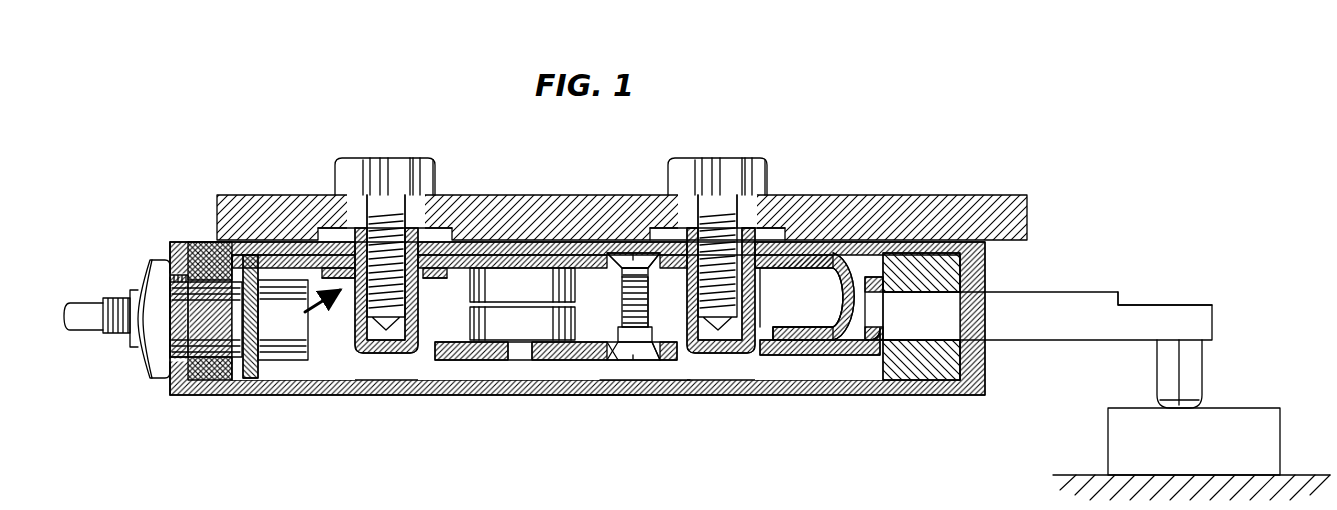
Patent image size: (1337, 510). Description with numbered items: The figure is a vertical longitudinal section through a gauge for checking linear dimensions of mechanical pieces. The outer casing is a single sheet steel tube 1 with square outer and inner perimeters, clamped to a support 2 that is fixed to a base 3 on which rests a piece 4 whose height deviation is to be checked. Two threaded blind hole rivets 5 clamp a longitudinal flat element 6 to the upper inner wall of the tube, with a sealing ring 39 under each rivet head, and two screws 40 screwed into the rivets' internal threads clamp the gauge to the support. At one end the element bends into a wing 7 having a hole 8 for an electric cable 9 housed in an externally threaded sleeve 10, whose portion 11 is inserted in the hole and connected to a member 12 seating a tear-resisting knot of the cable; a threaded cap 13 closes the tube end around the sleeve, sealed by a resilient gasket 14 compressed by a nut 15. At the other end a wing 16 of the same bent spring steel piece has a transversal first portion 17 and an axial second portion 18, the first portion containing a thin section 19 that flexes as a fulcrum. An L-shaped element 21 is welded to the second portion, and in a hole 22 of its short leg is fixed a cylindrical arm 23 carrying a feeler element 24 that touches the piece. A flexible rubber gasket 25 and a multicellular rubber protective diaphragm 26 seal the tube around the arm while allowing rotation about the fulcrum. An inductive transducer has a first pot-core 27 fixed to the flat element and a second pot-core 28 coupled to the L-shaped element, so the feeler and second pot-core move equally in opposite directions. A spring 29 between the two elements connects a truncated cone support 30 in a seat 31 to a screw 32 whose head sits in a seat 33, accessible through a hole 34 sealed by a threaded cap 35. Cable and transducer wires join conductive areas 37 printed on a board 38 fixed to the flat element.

The sheet steel tube 1 is at (878, 394).
The support 2 is at (1030, 224).
The base 3 is at (1065, 480).
The piece 4 is at (1280, 438).
The threaded blind hole rivet 5 is at (354, 328).
The longitudinal flat element 6 is at (276, 256).
The wing 7 is at (250, 380).
The hole 8 is at (240, 305).
The electric cable 9 is at (88, 300).
The sleeve 10 is at (206, 352).
The portion 11 is at (258, 322).
The member 12 is at (300, 347).
The threaded cap 13 is at (202, 248).
The resilient gasket 14 is at (176, 250).
The nut 15 is at (147, 262).
The wing 16 is at (838, 298).
The first portion 17 is at (840, 270).
The second portion 18 is at (790, 336).
The section 19 is at (838, 308).
The L-shaped element 21 is at (466, 354).
The hole 22 is at (878, 297).
The cylindrical arm 23 is at (1075, 292).
The feeler element 24 is at (1202, 372).
The flexible rubber gasket 25 is at (938, 384).
The protective diaphragm 26 is at (988, 270).
The pot-core 27 is at (536, 294).
The pot-core 28 is at (536, 332).
The spring 29 is at (622, 296).
The truncated cone support 30 is at (616, 256).
The seat 31 is at (612, 268).
The screw 32 is at (620, 348).
The seat 33 is at (655, 350).
The hole 34 is at (672, 386).
The threaded cap 35 is at (630, 386).
The conductive area 37 is at (436, 279).
The board 38 is at (452, 276).
The sealing ring 39 is at (442, 246).
The screw 40 is at (432, 165).